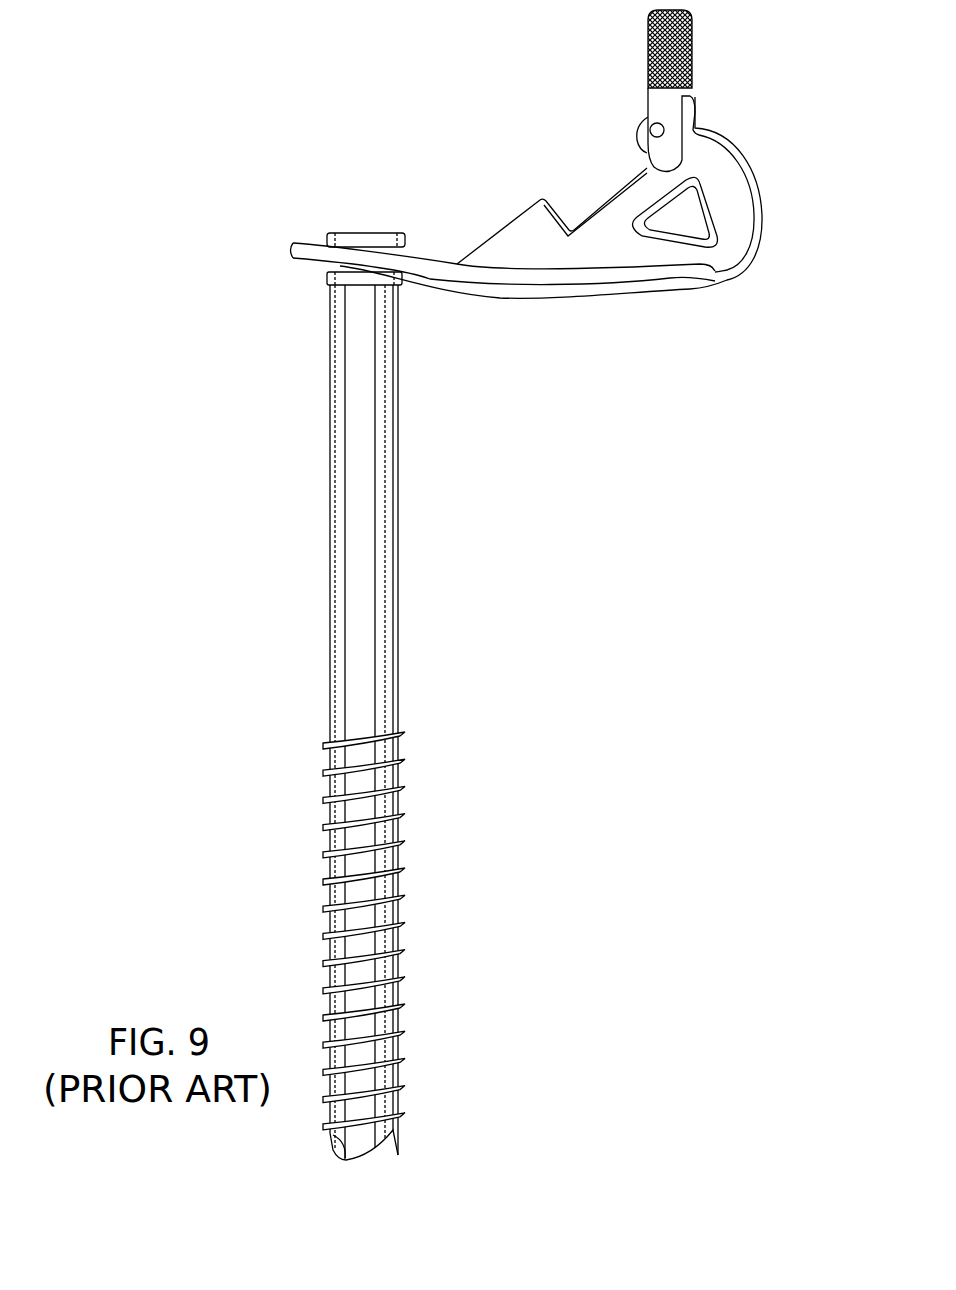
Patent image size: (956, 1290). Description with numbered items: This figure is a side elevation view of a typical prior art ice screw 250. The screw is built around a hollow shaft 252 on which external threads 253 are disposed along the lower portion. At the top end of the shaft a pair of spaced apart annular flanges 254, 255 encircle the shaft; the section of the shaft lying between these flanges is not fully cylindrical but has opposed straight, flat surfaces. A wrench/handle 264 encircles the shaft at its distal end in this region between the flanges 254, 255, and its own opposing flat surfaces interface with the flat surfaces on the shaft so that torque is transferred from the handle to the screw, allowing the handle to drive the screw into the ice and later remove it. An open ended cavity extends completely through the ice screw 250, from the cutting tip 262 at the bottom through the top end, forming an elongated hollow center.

The ice screw 250 is at (214, 141).
The hollow shaft 252 is at (397, 508).
The external threads 253 is at (290, 733).
The annular flange 254 is at (362, 233).
The annular flange 255 is at (356, 275).
The cutting tip 262 is at (358, 1160).
The wrench/handle 264 is at (774, 165).